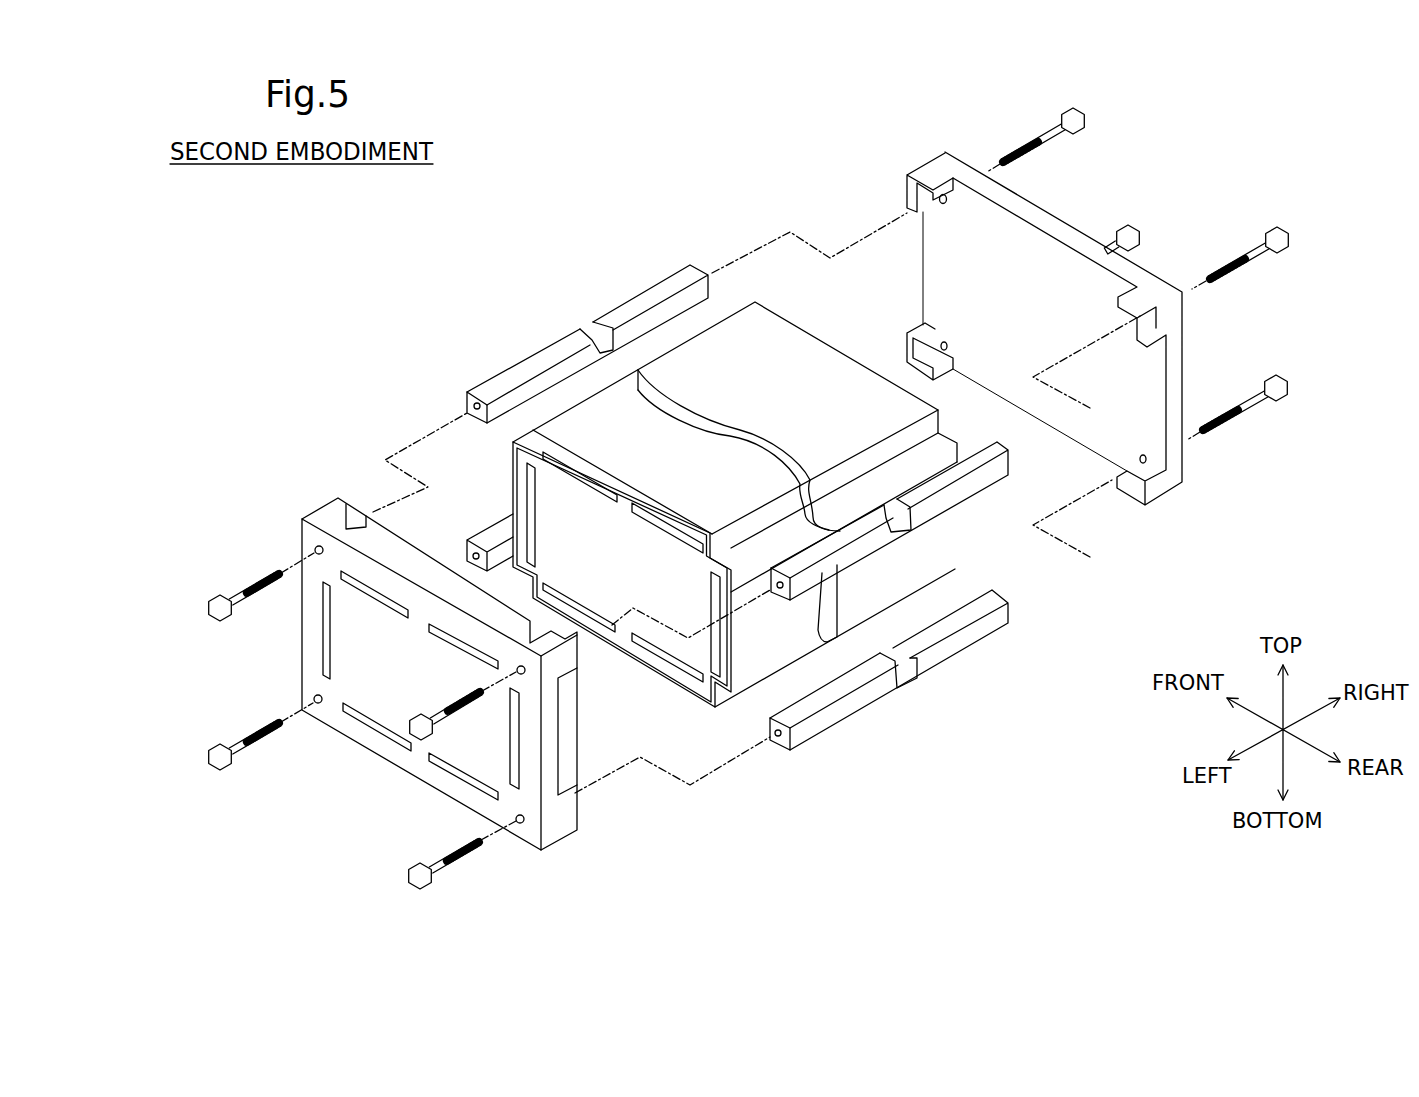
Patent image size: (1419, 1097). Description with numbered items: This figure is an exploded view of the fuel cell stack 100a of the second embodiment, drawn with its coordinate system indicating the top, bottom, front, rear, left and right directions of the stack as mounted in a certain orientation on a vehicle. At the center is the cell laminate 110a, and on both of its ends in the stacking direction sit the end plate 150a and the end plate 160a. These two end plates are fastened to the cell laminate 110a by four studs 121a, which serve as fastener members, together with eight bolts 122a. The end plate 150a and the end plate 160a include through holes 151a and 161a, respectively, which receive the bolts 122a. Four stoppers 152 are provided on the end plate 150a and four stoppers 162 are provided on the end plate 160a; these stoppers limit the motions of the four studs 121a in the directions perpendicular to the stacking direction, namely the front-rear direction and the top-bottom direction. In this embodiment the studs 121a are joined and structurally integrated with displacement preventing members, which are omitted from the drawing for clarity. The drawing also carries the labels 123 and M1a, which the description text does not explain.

The fuel cell stack 100a is at (553, 213).
The cell laminate 110a is at (641, 680).
The stud 121a is at (747, 539).
The bolt 122a is at (235, 598).
The bolt hole of rail 123 is at (779, 740).
The end plate 150a is at (1039, 348).
The through hole 151a is at (918, 329).
The stopper 152 is at (905, 194).
The end plate 160a is at (426, 648).
The through hole 161a is at (315, 548).
The stopper 162 is at (345, 513).
The slot M1a is at (329, 674).